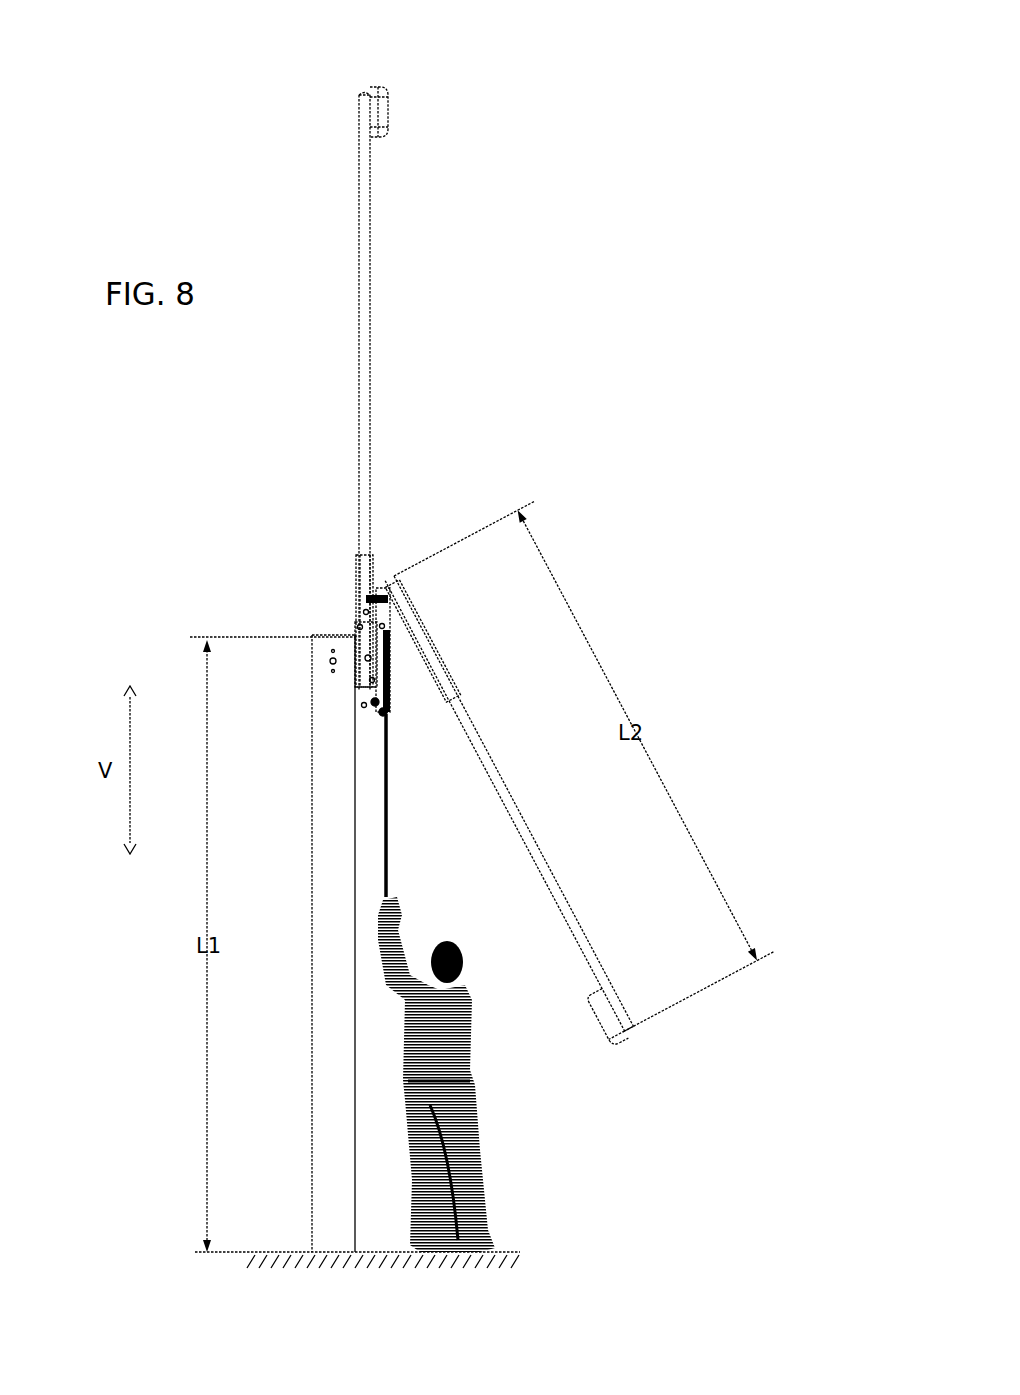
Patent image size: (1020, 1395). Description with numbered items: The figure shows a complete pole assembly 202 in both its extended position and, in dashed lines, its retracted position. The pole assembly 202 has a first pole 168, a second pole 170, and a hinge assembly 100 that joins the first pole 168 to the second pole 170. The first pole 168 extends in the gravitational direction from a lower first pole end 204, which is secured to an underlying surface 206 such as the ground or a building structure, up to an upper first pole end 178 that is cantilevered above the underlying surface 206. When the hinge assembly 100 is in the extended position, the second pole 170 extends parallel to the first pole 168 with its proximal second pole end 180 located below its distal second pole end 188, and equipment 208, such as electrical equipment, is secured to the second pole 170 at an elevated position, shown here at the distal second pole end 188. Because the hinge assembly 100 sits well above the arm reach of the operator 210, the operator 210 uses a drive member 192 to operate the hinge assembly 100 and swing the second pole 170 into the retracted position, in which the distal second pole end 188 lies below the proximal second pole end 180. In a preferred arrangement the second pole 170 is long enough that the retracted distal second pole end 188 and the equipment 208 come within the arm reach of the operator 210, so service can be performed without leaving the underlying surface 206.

The hinge assembly 100 is at (403, 652).
The first pole 168 is at (310, 850).
The second pole 170 is at (372, 330).
The upper first pole end 178 is at (315, 638).
The proximal second pole end 180 is at (356, 570).
The distal second pole end 188 is at (362, 105).
The drive member 192 is at (393, 825).
The pole assembly 202 is at (233, 468).
The lower first pole end 204 is at (310, 1250).
The underlying surface 206 is at (497, 1250).
The equipment 208 is at (392, 107).
The operator 210 is at (470, 995).